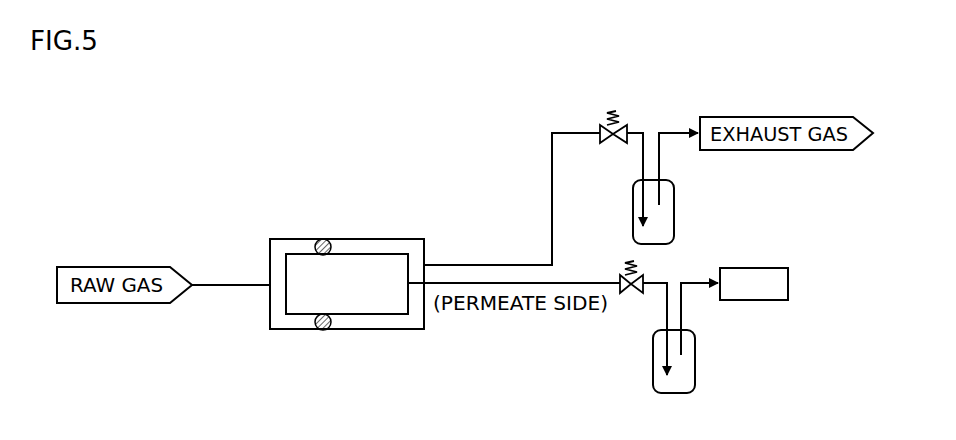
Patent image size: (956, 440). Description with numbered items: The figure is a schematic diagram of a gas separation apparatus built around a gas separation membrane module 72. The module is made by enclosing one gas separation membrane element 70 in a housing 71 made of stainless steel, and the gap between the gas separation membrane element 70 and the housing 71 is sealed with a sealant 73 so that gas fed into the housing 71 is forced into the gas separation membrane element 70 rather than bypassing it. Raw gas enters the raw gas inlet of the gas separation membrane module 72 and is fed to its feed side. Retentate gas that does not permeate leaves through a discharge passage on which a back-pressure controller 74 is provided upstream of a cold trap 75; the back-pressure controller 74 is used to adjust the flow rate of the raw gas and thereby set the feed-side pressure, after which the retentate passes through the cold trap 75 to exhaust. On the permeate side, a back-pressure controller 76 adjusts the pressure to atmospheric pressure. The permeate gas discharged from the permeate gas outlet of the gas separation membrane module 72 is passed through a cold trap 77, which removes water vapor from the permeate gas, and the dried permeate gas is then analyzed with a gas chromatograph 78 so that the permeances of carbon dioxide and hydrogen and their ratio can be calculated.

The gas separation membrane element 70 is at (378, 315).
The housing 71 is at (288, 238).
The gas separation membrane module 72 is at (404, 225).
The sealant 73 is at (323, 238).
The back-pressure controller 74 is at (599, 112).
The cold trap 75 is at (679, 204).
The back-pressure controller 76 is at (616, 262).
The cold trap 77 is at (699, 353).
The gas chromatograph 78 is at (769, 266).